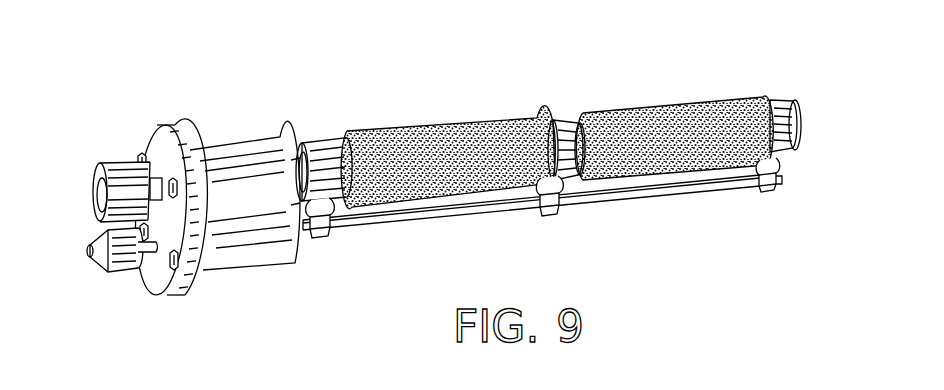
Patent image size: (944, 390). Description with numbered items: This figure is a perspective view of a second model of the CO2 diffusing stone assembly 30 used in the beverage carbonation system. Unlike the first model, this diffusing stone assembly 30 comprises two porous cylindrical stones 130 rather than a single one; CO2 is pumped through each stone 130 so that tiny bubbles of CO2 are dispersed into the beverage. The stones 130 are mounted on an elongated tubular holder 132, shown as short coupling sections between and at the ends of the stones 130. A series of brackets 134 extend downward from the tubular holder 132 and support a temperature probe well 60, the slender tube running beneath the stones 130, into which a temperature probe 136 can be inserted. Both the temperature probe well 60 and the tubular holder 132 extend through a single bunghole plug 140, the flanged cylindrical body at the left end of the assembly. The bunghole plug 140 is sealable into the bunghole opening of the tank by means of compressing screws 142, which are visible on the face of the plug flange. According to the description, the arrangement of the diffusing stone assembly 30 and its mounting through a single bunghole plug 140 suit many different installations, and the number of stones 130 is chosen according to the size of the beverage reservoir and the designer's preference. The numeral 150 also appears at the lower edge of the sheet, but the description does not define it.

The diffusing stone assembly 30 is at (453, 193).
The temperature probe well 60 is at (152, 258).
The porous cylindrical stone 130 is at (398, 130).
The tubular holder 132 is at (147, 140).
The bracket 134 is at (545, 210).
The temperature probe 136 is at (452, 222).
The bunghole plug 140 is at (267, 263).
The compressing screw 142 is at (188, 352).
The element 150 is at (650, 380).